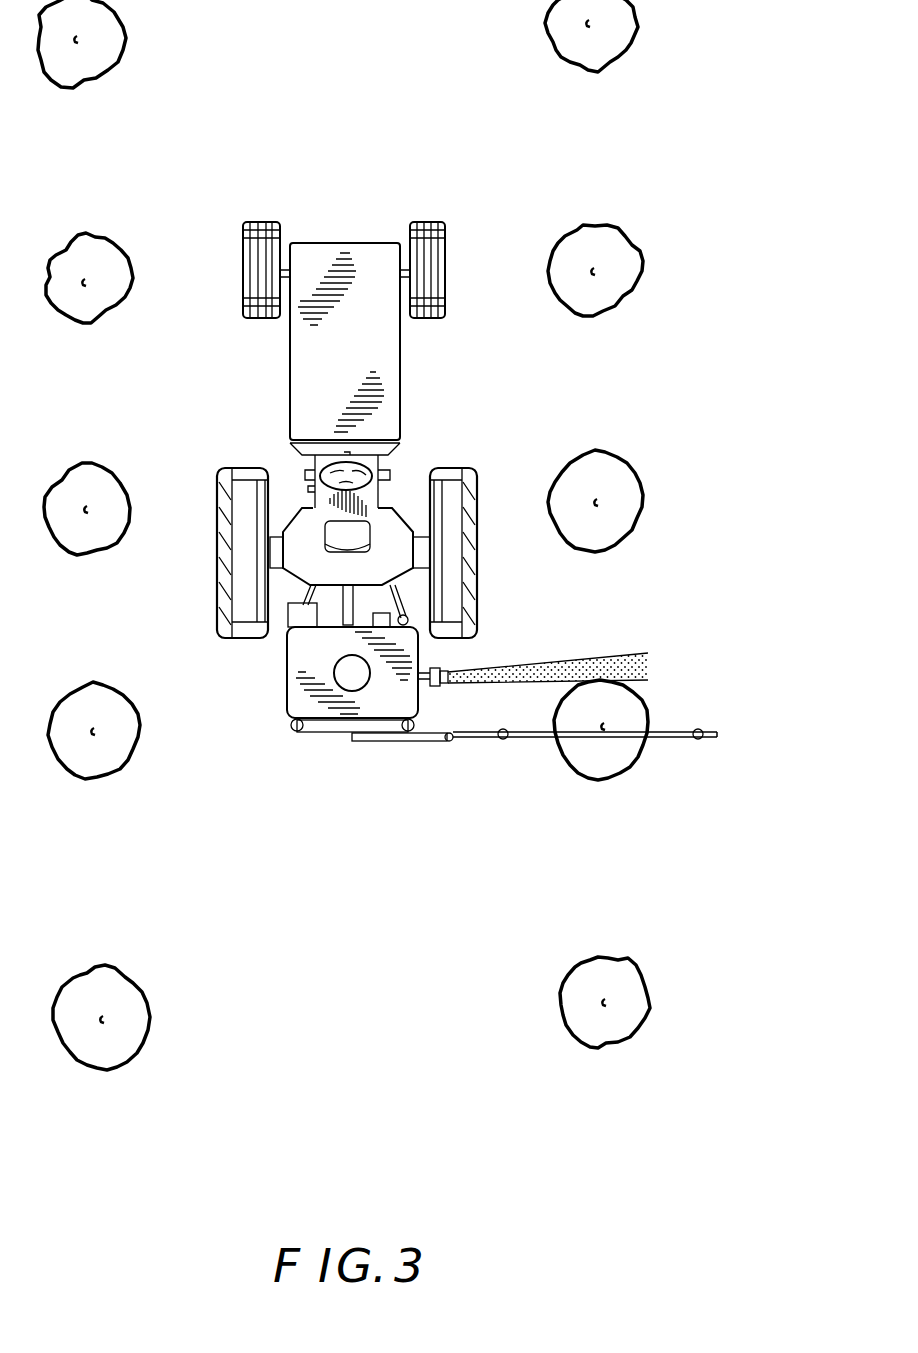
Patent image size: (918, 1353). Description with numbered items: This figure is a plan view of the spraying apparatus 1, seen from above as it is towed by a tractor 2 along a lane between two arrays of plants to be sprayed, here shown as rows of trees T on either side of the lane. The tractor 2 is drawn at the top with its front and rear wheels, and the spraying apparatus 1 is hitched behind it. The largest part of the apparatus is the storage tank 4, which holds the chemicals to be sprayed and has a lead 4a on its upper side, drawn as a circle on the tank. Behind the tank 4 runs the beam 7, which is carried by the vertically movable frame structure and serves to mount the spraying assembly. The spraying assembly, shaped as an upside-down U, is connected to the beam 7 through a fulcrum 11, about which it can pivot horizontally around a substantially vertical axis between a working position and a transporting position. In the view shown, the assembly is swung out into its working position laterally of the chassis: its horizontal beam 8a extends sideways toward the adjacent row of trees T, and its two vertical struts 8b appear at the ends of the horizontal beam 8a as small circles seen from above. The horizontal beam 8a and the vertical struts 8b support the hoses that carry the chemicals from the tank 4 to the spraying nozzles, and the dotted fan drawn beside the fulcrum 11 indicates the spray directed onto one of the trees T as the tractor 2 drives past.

The spraying apparatus 1 is at (351, 772).
The tractor 2 is at (400, 411).
The storage tank 4 is at (300, 687).
The lead 4a is at (354, 676).
The beam 7 is at (390, 742).
The horizontal beam 8a is at (670, 739).
The vertical struts 8b is at (503, 741).
The fulcrum 11 is at (448, 671).
The tree T is at (602, 291).